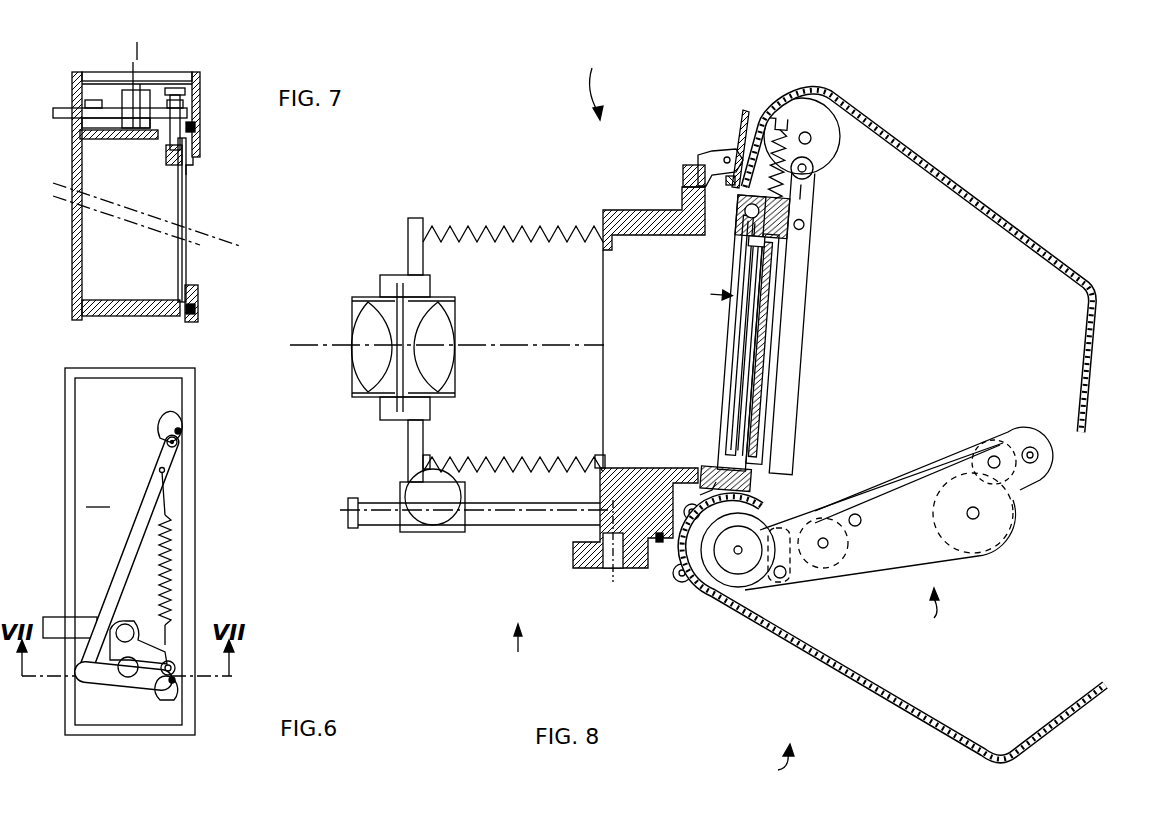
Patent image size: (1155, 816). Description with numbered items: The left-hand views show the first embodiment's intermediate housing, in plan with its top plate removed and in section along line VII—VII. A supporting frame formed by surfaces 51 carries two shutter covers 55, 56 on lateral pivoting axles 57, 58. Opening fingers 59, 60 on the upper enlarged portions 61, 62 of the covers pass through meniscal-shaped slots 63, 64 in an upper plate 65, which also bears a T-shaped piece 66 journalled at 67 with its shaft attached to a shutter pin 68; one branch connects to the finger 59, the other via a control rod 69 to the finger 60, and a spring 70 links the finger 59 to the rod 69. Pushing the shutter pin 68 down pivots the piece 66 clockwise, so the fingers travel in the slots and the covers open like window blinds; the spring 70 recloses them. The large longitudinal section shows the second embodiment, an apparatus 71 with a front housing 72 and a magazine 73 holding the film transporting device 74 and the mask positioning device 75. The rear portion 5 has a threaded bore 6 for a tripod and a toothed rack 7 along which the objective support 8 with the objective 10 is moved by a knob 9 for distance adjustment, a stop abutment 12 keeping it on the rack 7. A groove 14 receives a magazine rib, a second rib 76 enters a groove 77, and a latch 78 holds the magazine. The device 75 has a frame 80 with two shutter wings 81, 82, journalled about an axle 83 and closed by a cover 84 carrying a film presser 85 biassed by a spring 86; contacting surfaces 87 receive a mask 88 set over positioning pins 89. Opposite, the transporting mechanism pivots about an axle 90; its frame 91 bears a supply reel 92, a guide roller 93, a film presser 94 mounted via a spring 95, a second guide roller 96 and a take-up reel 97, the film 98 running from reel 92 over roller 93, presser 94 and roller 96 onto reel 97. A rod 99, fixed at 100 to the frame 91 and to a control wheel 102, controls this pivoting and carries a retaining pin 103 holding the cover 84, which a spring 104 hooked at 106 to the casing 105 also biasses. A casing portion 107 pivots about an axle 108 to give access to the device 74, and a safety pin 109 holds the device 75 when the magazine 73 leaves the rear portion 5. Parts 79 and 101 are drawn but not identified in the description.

In FIG. 8, the rear portion 5 is at (634, 572).
In FIG. 8, the threaded bore 6 is at (594, 572).
In FIG. 8, the toothed rack 7 is at (490, 518).
In FIG. 8, the objective support 8 is at (408, 444).
In FIG. 8, the knob 9 is at (432, 510).
In FIG. 8, the objective 10 is at (352, 395).
In FIG. 8, the stop abutment 12 is at (346, 516).
In FIG. 8, the groove 14 is at (660, 530).
In FIG. 7, the surfaces 51 is at (202, 148).
In FIG. 7, the shutter cover 55 is at (229, 220).
In FIG. 7, the shutter cover 56 is at (187, 200).
In FIG. 7, the pivoting axle 57 is at (226, 219).
In FIG. 6, the pivoting axle 57 is at (176, 682).
In FIG. 7, the pivoting axle 58 is at (196, 128).
In FIG. 6, the pivoting axle 58 is at (182, 430).
In FIG. 7, the opening finger 59 is at (177, 104).
In FIG. 6, the opening finger 59 is at (176, 667).
In FIG. 7, the opening finger 60 is at (174, 108).
In FIG. 6, the opening finger 60 is at (178, 446).
In FIG. 7, the upper enlarged portion 61 is at (150, 172).
In FIG. 7, the upper enlarged portion 62 is at (174, 166).
In FIG. 6, the meniscal-shaped slot 63 is at (160, 688).
In FIG. 6, the meniscal-shaped slot 64 is at (160, 426).
In FIG. 7, the upper plate 65 is at (118, 140).
In FIG. 6, the upper plate 65 is at (98, 496).
In FIG. 6, the T-shaped piece 66 is at (108, 676).
In FIG. 7, the pivot axle 67 is at (136, 88).
In FIG. 6, the pivot axle 67 is at (142, 654).
In FIG. 6, the shutter pin 68 is at (52, 617).
In FIG. 6, the control rod 69 is at (126, 553).
In FIG. 6, the spring 70 is at (176, 546).
In FIG. 8, the apparatus 71 is at (607, 89).
In FIG. 8, the front housing 72 is at (501, 644).
In FIG. 8, the magazine 73 is at (770, 763).
In FIG. 8, the film transporting device 74 is at (920, 612).
In FIG. 8, the mask positioning device 75 is at (710, 294).
In FIG. 8, the second rib 76 is at (700, 184).
In FIG. 8, the groove 77 is at (700, 158).
In FIG. 8, the hook or latch 78 is at (730, 150).
In FIG. 8, the roller 79 is at (692, 504).
In FIG. 8, the frame 80 is at (736, 356).
In FIG. 8, the shutter wing 81 is at (677, 330).
In FIG. 8, the shutter wing 82 is at (748, 398).
In FIG. 8, the axle 83 is at (784, 208).
In FIG. 8, the cover 84 is at (772, 418).
In FIG. 8, the film presser 85 is at (768, 292).
In FIG. 8, the spring 86 is at (782, 318).
In FIG. 8, the supporting surfaces 87 is at (750, 228).
In FIG. 8, the mask 88 is at (750, 330).
In FIG. 8, the positioning pins 89 is at (770, 240).
In FIG. 8, the pivoting axle 90 is at (720, 600).
In FIG. 8, the frame 91 is at (900, 550).
In FIG. 8, the supply reel 92 is at (1004, 528).
In FIG. 8, the guide roller 93 is at (1048, 458).
In FIG. 8, the film presser 94 is at (912, 460).
In FIG. 8, the spring 95 is at (861, 520).
In FIG. 8, the second guide roller 96 is at (832, 566).
In FIG. 8, the take-up reel 97 is at (742, 578).
In FIG. 8, the film 98 is at (1010, 476).
In FIG. 8, the rod 99 is at (813, 300).
In FIG. 8, the fixing point 100 is at (779, 580).
In FIG. 8, the pivot 101 is at (812, 160).
In FIG. 8, the control wheel 102 is at (826, 100).
In FIG. 8, the retaining pin 103 is at (808, 218).
In FIG. 8, the spring 104 is at (790, 126).
In FIG. 8, the casing 105 is at (976, 196).
In FIG. 8, the hook 106 is at (786, 112).
In FIG. 8, the casing portion 107 is at (795, 678).
In FIG. 8, the axle 108 is at (682, 582).
In FIG. 8, the safety pin 109 is at (706, 490).